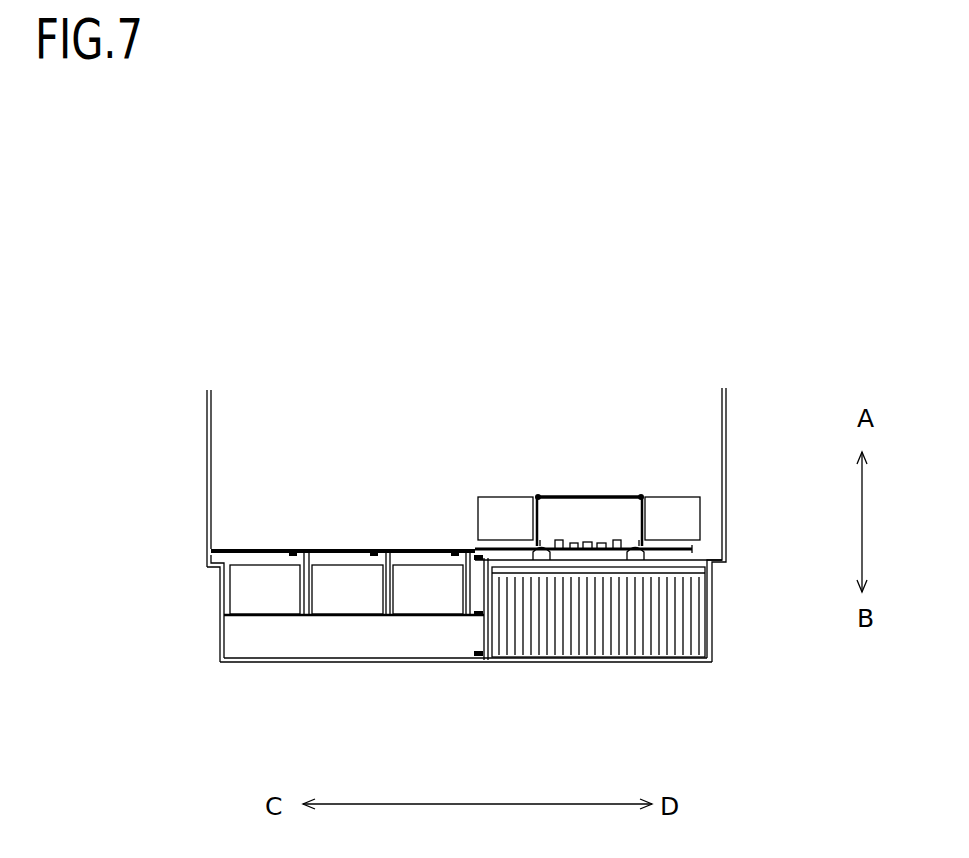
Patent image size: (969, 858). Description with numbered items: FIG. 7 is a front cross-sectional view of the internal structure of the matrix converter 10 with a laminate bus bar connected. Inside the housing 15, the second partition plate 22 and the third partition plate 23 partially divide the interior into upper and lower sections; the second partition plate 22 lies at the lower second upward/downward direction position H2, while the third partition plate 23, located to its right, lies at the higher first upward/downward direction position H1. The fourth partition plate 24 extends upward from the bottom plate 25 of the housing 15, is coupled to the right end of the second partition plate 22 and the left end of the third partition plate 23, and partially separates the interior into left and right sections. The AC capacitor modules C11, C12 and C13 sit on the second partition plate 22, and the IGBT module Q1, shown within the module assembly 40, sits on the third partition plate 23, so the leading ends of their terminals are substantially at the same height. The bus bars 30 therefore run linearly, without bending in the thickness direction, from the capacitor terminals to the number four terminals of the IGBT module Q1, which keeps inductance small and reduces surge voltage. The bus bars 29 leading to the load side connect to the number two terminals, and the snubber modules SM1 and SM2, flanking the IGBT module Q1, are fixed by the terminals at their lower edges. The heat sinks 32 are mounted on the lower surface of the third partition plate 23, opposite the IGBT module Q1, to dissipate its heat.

The power conversion device 10 is at (192, 260).
The housing 15 is at (207, 492).
The second partition plate 22 is at (232, 618).
The third partition plate 23 is at (700, 560).
The fourth partition plate 24 is at (484, 586).
The bottom plate 25 is at (528, 663).
The bus bar 29 is at (673, 547).
The bus bar 30 is at (325, 548).
The heat sink 32 is at (698, 625).
The semiconductor module 40 is at (555, 495).
The capacitor C11 is at (280, 598).
The capacitor C12 is at (356, 598).
The capacitor C13 is at (418, 598).
The IGBT module Q1 is at (575, 512).
The snubber module SM1 is at (502, 507).
The snubber module SM2 is at (668, 507).
The first upward/downward direction position H1 is at (733, 561).
The second upward/downward direction position H2 is at (212, 617).